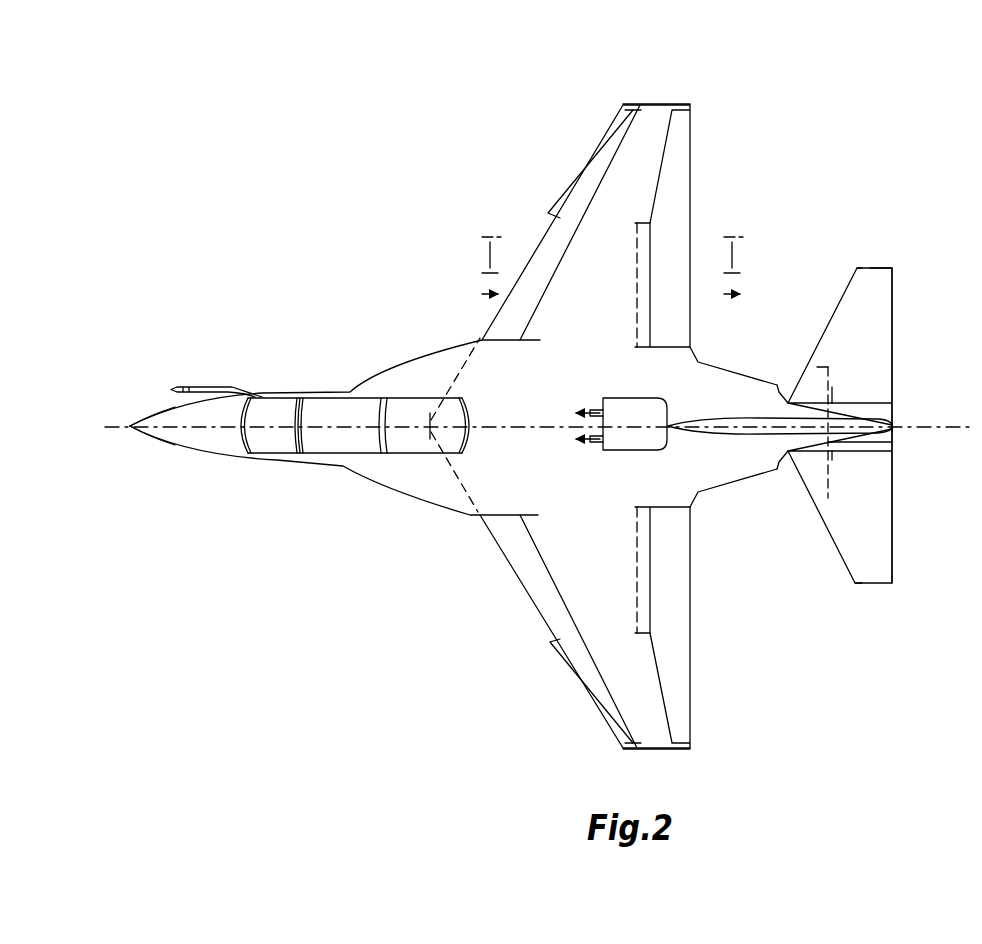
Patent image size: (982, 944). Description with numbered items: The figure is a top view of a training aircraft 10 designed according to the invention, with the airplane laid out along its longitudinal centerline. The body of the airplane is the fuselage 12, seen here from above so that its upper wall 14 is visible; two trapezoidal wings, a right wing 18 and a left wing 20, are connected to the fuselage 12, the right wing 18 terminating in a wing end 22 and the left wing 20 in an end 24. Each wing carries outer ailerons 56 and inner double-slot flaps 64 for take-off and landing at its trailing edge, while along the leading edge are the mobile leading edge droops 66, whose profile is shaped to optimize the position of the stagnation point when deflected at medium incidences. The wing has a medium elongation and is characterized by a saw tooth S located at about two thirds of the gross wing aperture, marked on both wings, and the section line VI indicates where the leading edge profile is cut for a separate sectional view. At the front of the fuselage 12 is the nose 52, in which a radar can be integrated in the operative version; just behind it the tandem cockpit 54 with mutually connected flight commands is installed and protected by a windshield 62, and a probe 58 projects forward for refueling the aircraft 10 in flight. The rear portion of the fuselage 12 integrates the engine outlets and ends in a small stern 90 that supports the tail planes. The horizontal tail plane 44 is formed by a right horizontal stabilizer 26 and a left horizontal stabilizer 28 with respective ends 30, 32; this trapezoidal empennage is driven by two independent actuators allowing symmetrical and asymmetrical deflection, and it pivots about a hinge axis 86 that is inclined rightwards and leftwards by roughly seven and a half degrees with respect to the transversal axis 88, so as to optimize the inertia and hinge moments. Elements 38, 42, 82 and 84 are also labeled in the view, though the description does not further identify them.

The aircraft 10 is at (382, 150).
The fuselage 12 is at (491, 498).
The upper wall 14 is at (480, 375).
The right wing 18 is at (630, 158).
The left wing 20 is at (606, 634).
The wing end 22 is at (672, 98).
The end 24 is at (674, 753).
The right horizontal stabilizer 26 is at (878, 318).
The left horizontal stabilizer 28 is at (864, 523).
The end 30 is at (863, 267).
The end 32 is at (862, 586).
The engine exhaust nozzle 38 is at (709, 418).
The fin trailing edge 42 is at (882, 273).
The horizontal tail plane 44 is at (886, 262).
The nose 52 is at (132, 431).
The cockpit 54 is at (360, 408).
The outer ailerons 56 is at (683, 142).
The probe 58 is at (204, 384).
The windshield 62 is at (278, 448).
The inner flaps 64 is at (678, 233).
The mobile leading edge 66 is at (585, 177).
The aft fuselage edge 82 is at (786, 389).
The aft fuselage shoulder 84 is at (722, 366).
The hinge axis 86 is at (834, 394).
The transversal axis 88 is at (815, 365).
The small stern 90 is at (893, 423).
The saw tooth S is at (556, 216).
The section line VI is at (612, 265).